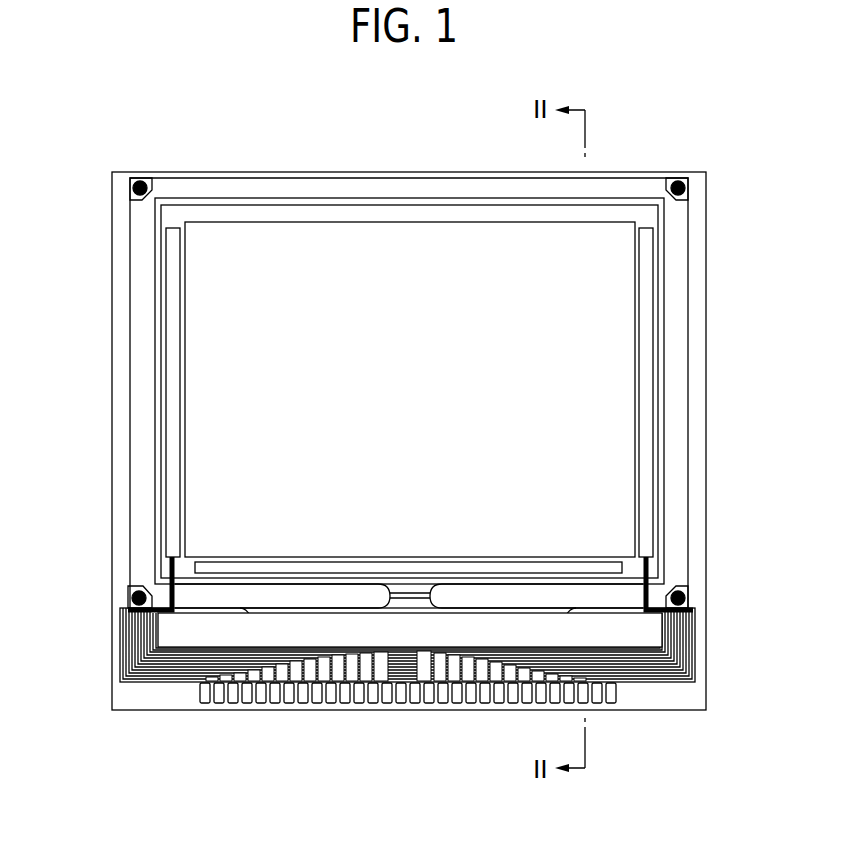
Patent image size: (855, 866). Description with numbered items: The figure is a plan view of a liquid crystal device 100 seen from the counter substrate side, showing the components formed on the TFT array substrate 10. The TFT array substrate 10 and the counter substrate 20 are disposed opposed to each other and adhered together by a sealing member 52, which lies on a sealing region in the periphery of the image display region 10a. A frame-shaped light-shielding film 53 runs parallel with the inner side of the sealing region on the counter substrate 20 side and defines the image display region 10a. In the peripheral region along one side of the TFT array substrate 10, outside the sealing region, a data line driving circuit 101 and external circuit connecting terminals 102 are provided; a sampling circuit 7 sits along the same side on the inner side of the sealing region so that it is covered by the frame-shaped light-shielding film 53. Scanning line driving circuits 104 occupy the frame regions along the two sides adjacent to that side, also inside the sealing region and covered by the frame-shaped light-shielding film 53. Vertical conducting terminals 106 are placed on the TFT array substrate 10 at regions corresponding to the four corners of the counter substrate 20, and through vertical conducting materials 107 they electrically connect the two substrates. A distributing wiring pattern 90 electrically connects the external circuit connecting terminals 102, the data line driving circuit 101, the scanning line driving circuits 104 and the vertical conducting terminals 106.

The liquid crystal device 100 is at (652, 105).
The TFT array substrate 10 is at (235, 178).
The image display region 10a is at (227, 345).
The counter substrate 20 is at (432, 198).
The sealing member 52 is at (680, 326).
The frame-shaped light-shielding film 53 is at (655, 565).
The sampling circuit 7 is at (558, 570).
The scanning line driving circuits 104 is at (173, 398).
The vertical conducting terminals 106 is at (172, 178).
The vertical conducting materials 107 is at (125, 604).
The distributing wiring pattern 90 is at (118, 658).
The data line driving circuit 101 is at (182, 637).
The external circuit connecting terminals 102 is at (376, 690).